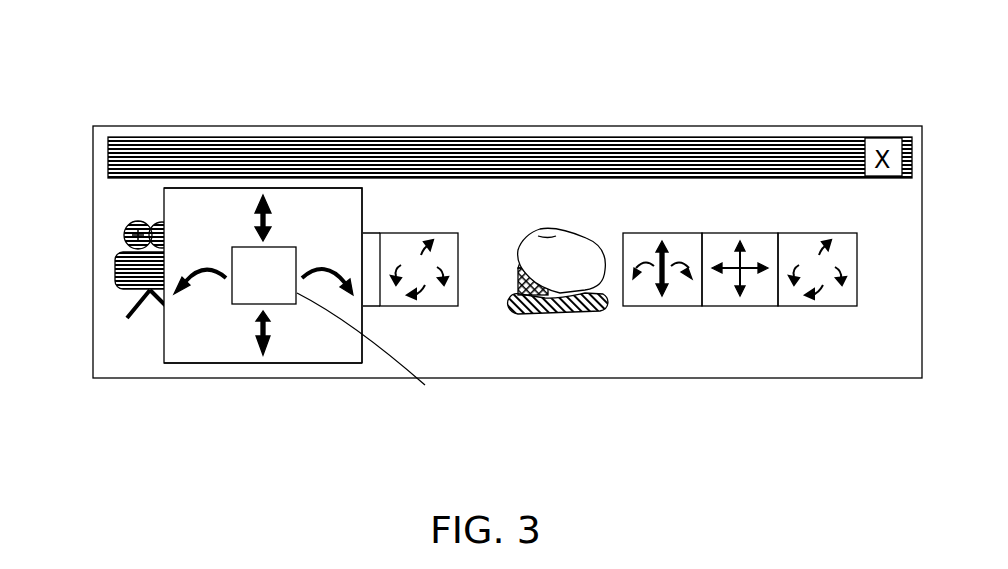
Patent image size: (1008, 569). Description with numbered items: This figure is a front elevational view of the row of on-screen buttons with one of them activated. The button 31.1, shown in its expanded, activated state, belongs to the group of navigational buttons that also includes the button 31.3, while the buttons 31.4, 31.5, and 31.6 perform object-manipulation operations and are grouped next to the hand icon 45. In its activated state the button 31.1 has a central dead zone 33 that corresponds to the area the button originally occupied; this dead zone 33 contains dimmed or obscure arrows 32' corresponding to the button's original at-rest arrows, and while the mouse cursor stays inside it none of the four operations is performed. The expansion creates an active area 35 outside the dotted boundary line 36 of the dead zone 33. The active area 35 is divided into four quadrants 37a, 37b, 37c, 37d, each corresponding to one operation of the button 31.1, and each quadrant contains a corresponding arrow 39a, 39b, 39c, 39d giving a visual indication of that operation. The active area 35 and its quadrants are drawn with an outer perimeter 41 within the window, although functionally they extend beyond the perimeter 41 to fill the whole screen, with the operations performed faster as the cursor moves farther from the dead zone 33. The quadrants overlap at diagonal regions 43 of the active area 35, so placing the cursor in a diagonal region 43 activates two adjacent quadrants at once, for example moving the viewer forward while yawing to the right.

The button 31.1 is at (249, 366).
The button 31.3 is at (438, 318).
The button 31.4 is at (652, 318).
The button 31.5 is at (733, 318).
The button 31.6 is at (812, 318).
The dimmed or obscure arrows 32' is at (281, 260).
The dead zone 33 is at (243, 262).
The active area 35 is at (187, 356).
The dotted boundary line 36 is at (425, 385).
The quadrant 37a is at (307, 236).
The quadrant 37b is at (302, 313).
The quadrant 37c is at (218, 264).
The quadrant 37d is at (327, 246).
The arrow 39a is at (265, 196).
The arrow 39b is at (273, 350).
The arrow 39c is at (185, 306).
The arrow 39d is at (332, 268).
The outer perimeter 41 is at (237, 365).
The diagonal regions 43 is at (198, 203).
The hand icon 45 is at (589, 236).